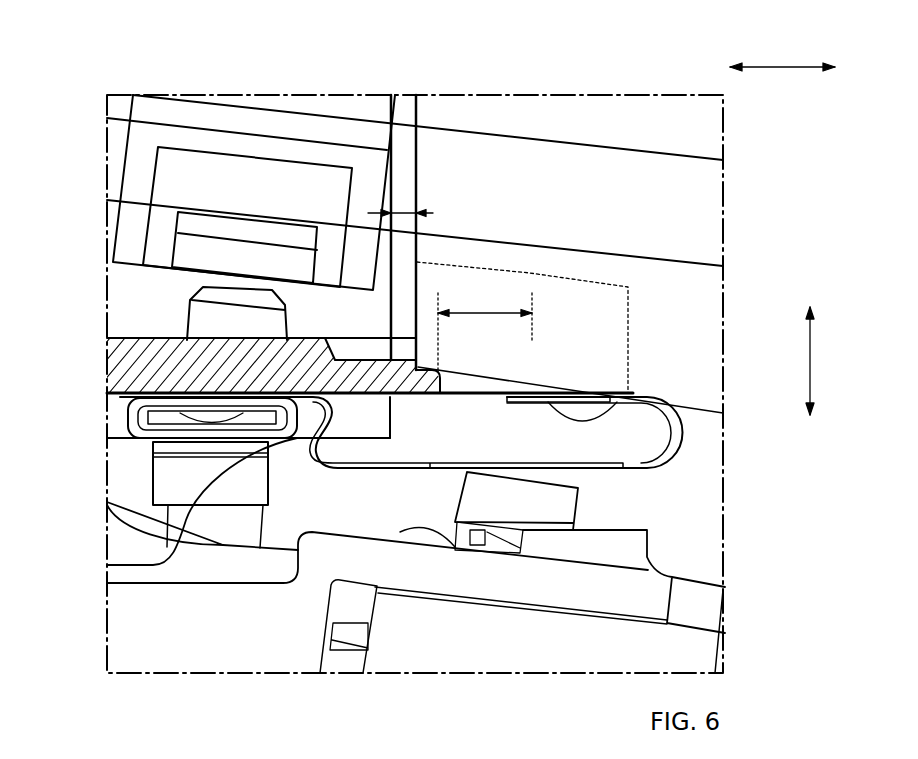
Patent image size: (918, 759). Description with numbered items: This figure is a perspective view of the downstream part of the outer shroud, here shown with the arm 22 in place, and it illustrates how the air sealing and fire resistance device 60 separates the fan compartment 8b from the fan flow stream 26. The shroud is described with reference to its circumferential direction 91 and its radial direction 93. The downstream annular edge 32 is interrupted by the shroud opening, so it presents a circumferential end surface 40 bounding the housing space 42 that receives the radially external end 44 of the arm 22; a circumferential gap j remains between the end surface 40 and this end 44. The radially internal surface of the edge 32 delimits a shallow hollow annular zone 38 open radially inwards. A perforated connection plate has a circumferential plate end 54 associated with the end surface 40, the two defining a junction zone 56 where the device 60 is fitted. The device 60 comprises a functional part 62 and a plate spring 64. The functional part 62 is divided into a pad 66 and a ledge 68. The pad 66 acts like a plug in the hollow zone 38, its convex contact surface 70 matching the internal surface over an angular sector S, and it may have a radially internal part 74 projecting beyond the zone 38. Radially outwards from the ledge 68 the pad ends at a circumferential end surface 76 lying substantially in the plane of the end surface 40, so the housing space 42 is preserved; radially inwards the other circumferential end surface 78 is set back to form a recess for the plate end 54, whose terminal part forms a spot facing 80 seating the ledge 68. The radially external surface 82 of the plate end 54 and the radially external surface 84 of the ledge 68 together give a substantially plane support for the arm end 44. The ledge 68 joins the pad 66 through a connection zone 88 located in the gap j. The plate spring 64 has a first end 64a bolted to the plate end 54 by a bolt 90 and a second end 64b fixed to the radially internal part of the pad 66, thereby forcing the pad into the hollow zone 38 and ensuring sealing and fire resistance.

The arm 22 is at (103, 618).
The fan flow stream 26 is at (503, 739).
The downstream annular edge 32 is at (723, 132).
The hollow annular zone 38 is at (695, 350).
The circumferential end surface 40 is at (412, 113).
The housing space 42 is at (403, 197).
The radially external end 44 is at (107, 118).
The circumferential plate end 54 is at (150, 364).
The junction zone 56 is at (448, 392).
The device 60 is at (321, 484).
The functional air sealing and fire resistance part 62 is at (523, 288).
The plate spring 64 is at (166, 405).
The first end 64a is at (128, 410).
The second end 64b is at (537, 403).
The pad 66 is at (490, 280).
The ledge 68 is at (347, 330).
The contact surface 70 is at (575, 280).
The radially internal part 74 is at (483, 390).
The circumferential end surface 76 is at (395, 335).
The circumferential end surface 78 is at (428, 394).
The spot facing 80 is at (368, 352).
The radially external surface 82 is at (138, 336).
The radially external surface 84 is at (110, 259).
The connection zone 88 is at (372, 340).
The bolt 90 is at (225, 415).
The circumferential direction 91 is at (782, 66).
The radial direction 93 is at (810, 360).
The fan compartment 8b is at (198, 91).
The circumferential gap j is at (410, 212).
The angular sector S is at (485, 302).